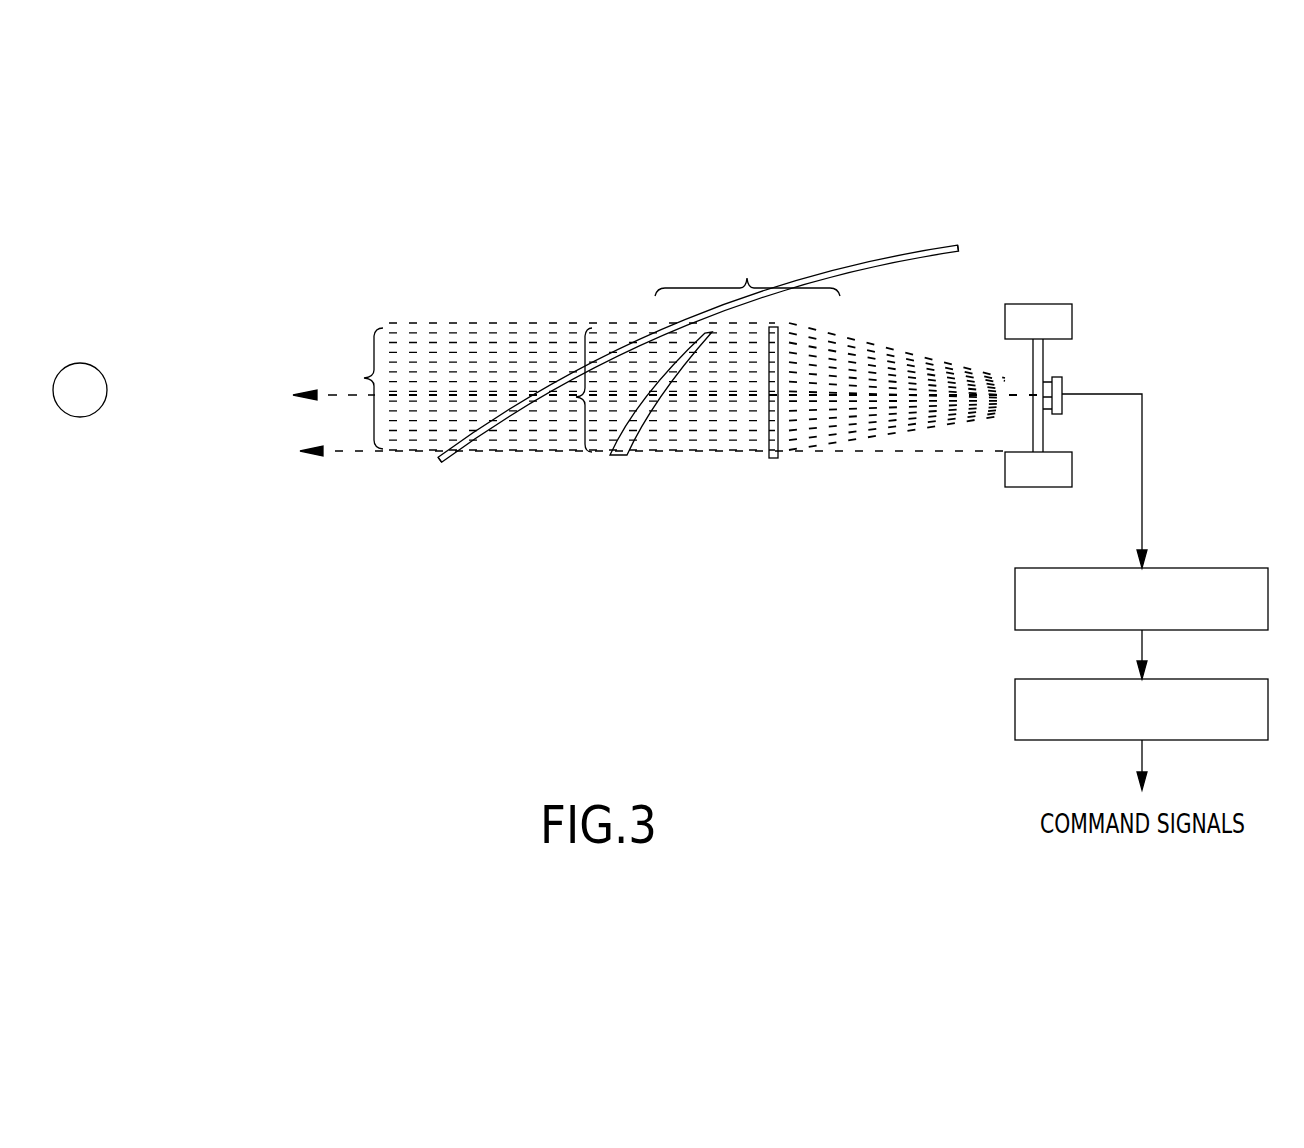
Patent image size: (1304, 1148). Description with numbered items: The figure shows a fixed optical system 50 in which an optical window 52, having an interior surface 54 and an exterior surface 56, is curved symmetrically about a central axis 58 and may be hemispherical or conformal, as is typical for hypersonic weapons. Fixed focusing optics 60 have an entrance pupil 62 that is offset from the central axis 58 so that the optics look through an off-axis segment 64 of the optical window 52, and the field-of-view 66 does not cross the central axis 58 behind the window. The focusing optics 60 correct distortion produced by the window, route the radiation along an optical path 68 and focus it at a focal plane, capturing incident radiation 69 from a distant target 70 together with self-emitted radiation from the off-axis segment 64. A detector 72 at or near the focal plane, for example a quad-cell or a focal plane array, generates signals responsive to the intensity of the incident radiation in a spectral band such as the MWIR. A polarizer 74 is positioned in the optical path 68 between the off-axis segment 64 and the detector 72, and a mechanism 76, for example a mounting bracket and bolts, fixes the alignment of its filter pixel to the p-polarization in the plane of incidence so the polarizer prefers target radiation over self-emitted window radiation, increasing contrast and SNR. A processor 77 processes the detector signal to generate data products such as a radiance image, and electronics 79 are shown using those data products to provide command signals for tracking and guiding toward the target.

The optical system 50 is at (292, 230).
The optical window 52 is at (614, 330).
The interior surface 54 is at (895, 266).
The exterior surface 56 is at (868, 258).
The central axis 58 is at (365, 452).
The fixed focusing optics 60 is at (725, 352).
The entrance pupil 62 is at (567, 390).
The off-axis segment 64 is at (512, 416).
The field-of-view 66 is at (665, 388).
The optical path 68 is at (337, 397).
The incident radiation 69 is at (457, 300).
The distant target 70 is at (68, 366).
The detector 72 is at (1063, 392).
The polarizer 74 is at (1032, 360).
The mechanism 76 is at (1038, 304).
The processor 77 is at (1015, 603).
The electronics 79 is at (1015, 711).